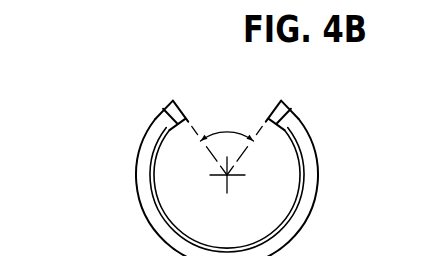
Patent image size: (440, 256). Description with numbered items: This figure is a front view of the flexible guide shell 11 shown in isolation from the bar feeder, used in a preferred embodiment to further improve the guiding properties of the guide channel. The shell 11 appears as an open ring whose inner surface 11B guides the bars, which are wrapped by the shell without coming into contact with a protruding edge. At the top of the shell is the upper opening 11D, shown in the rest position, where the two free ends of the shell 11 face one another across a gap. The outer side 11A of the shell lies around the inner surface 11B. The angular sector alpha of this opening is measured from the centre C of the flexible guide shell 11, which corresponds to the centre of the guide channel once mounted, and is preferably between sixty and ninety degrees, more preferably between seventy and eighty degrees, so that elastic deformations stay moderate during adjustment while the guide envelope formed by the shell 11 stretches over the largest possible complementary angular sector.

The flexible guide shell 11 is at (100, 194).
The outer layer of ring 11A is at (137, 160).
The inner surface 11B is at (275, 212).
The upper opening 11D is at (215, 78).